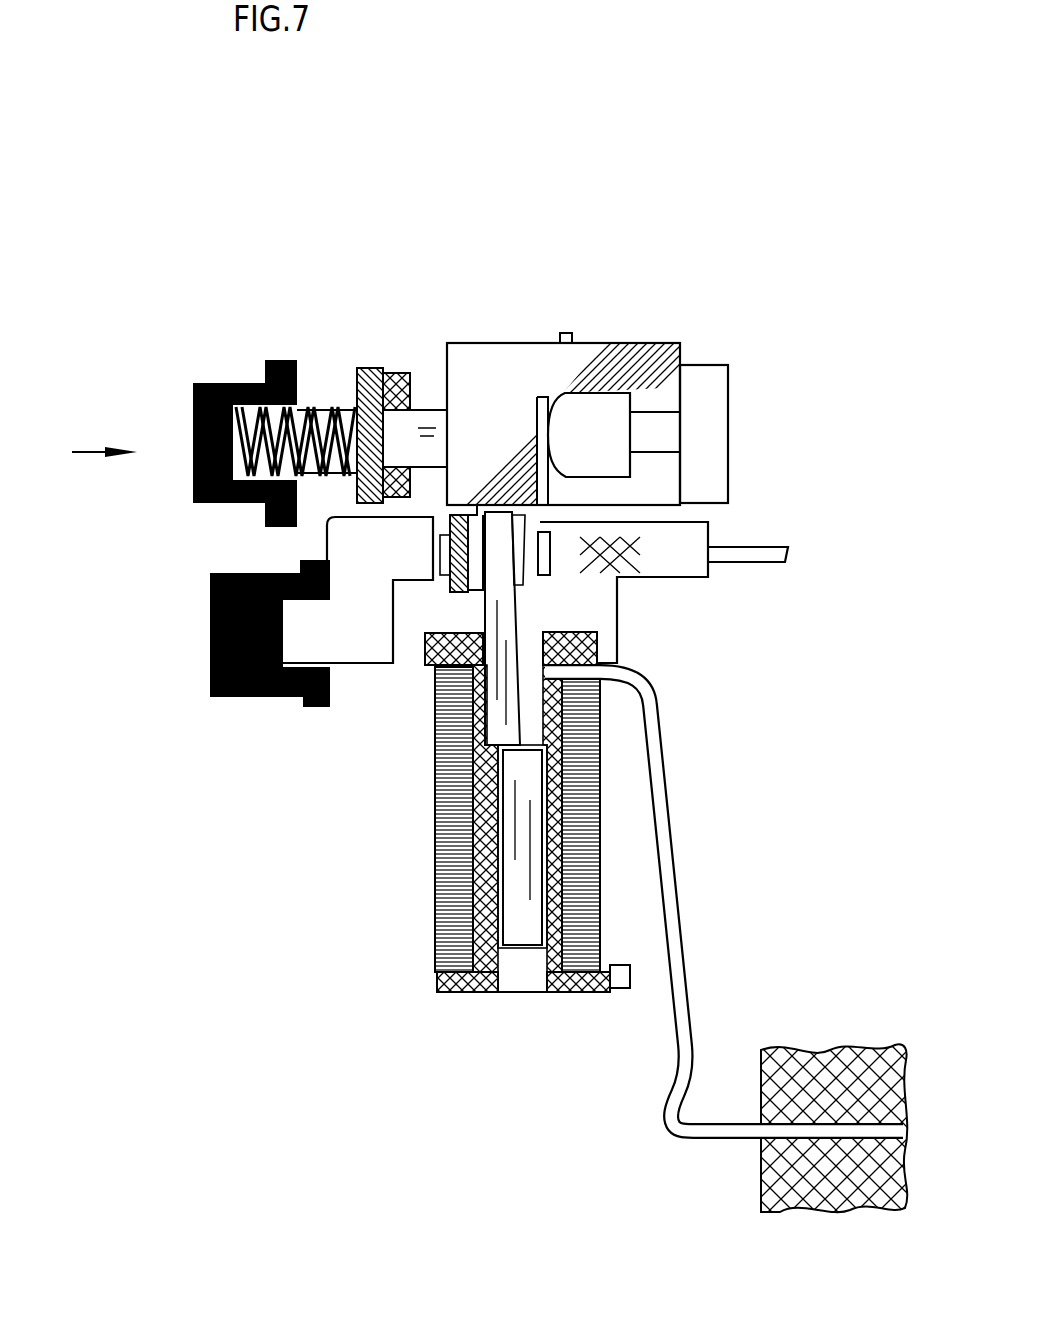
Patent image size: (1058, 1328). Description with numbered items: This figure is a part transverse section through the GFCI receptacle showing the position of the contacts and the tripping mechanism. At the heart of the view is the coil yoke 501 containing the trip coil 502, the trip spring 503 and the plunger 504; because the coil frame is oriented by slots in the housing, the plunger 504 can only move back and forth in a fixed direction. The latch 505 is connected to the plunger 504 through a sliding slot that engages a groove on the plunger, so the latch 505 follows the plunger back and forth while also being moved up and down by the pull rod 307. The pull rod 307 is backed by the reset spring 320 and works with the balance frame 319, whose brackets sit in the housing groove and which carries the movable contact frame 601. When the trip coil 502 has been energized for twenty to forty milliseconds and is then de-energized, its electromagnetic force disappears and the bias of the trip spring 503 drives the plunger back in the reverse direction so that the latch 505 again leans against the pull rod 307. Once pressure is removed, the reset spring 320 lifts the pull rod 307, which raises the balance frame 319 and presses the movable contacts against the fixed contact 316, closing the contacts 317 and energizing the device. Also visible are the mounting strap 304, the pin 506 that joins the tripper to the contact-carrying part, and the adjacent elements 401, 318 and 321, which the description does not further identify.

The adjusting screw 401 is at (213, 380).
The reset spring 320 is at (298, 380).
The mounting strap 304 is at (377, 373).
The pull rod 307 is at (430, 430).
The latch 505 is at (563, 512).
The balance frame 319 is at (665, 385).
The contacts 317 is at (276, 531).
The fixed contact 316 is at (433, 553).
The seal 318 is at (515, 562).
The pin 506 is at (785, 553).
The coil yoke 501 is at (683, 553).
The plunger 504 is at (498, 700).
The trip spring 503 is at (490, 808).
The trip coil 502 is at (455, 937).
The tube 321 is at (661, 774).
The movable contact frame 601 is at (768, 1186).